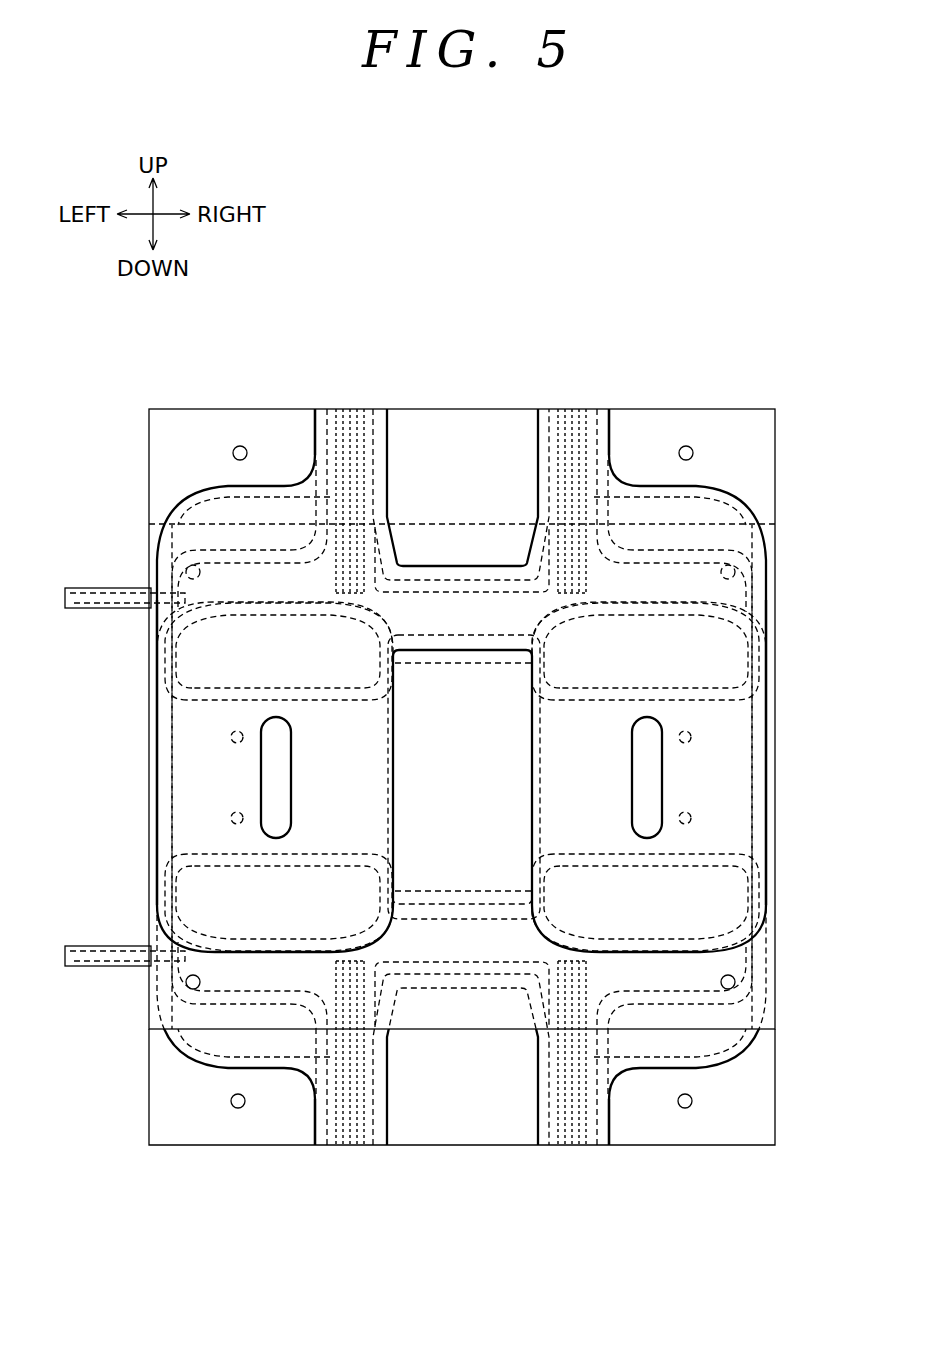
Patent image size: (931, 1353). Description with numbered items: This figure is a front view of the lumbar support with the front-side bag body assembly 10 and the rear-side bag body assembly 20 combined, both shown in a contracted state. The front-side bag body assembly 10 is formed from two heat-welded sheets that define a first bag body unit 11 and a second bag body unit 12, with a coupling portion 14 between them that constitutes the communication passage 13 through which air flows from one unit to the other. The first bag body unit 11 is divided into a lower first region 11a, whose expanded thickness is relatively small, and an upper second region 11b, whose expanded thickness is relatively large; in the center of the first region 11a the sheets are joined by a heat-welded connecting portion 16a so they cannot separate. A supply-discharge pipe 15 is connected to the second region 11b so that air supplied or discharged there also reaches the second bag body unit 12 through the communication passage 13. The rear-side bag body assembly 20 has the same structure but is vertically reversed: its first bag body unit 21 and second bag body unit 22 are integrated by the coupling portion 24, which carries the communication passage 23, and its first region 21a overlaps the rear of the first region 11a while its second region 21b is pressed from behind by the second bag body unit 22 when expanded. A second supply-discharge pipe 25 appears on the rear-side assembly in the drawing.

The front-side bag body assembly 10 is at (139, 756).
The first bag body unit 11 is at (149, 722).
The first region 11a is at (735, 808).
The second region 11b is at (740, 537).
The second bag body unit 12 is at (700, 548).
The communication passage 13 is at (577, 412).
The coupling portion 14 is at (606, 425).
The supply-discharge pipe 15 is at (80, 588).
The connecting portion 16a is at (665, 775).
The rear-side bag body assembly 20 is at (142, 1102).
The first bag body unit 21 is at (145, 1034).
The first region 21a is at (740, 595).
The second region 21b is at (700, 1055).
The second bag body unit 22 is at (680, 995).
The communication passage 23 is at (572, 1148).
The coupling portion 24 is at (608, 1117).
The tab 25 is at (83, 946).